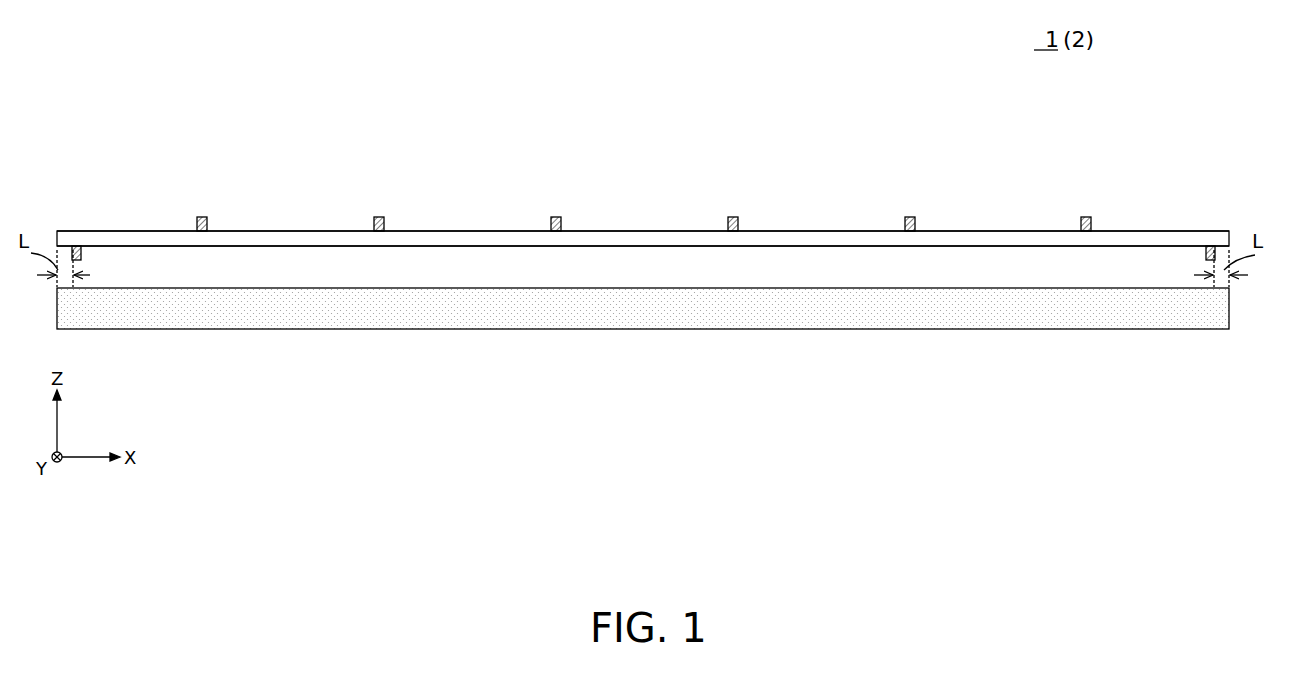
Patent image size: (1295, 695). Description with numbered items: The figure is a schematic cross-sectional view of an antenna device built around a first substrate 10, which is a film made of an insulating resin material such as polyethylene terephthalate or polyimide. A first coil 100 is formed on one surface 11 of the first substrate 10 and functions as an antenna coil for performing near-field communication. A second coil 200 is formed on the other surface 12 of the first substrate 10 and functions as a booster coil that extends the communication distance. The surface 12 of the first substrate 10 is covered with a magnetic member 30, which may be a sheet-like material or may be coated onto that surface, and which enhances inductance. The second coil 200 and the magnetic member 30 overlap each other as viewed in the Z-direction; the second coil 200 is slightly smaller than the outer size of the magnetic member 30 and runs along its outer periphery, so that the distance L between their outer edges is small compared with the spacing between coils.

The first substrate 10 is at (1132, 238).
The one surface 11 is at (950, 231).
The other surface 12 is at (950, 246).
The magnetic member 30 is at (1133, 321).
The first coil 100 is at (186, 215).
The second coil 200 is at (92, 256).